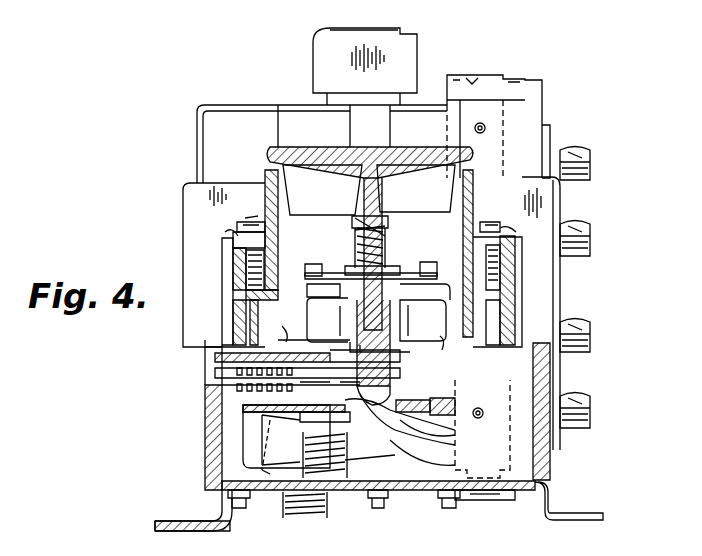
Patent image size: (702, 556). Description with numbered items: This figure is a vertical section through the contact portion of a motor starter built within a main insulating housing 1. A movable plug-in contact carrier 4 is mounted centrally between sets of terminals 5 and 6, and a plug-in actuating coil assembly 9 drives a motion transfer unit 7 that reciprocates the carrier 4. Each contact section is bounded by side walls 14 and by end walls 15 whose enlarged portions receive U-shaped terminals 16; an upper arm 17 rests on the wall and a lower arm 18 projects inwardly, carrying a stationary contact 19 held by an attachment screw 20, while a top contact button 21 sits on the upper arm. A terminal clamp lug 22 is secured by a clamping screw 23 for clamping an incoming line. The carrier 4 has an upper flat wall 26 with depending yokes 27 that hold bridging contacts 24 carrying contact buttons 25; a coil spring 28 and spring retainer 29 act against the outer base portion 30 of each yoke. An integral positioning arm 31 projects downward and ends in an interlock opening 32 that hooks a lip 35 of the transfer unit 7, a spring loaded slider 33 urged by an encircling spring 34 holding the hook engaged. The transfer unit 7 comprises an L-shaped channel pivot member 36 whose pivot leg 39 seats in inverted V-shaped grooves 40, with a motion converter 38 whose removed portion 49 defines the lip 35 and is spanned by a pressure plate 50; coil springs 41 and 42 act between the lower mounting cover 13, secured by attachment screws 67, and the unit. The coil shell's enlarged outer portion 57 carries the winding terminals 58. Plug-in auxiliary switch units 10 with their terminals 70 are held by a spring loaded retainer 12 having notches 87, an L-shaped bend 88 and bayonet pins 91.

The main insulating housing 1 is at (196, 132).
The movable plug-in contact carrier 4 is at (328, 145).
The terminals 5 is at (220, 310).
The terminals 6 is at (540, 296).
The motion transfer unit 7 is at (240, 428).
The plug-in actuating coil assembly 9 is at (402, 26).
The plug-in auxiliary switch units 10 is at (552, 131).
The spring loaded retainer 12 is at (484, 74).
The lower mounting cover 13 is at (576, 512).
The side walls 14 is at (300, 236).
The end walls 15 is at (258, 186).
The U-shaped terminals 16 is at (232, 280).
The upper arm 17 is at (235, 248).
The lower arm 18 is at (245, 346).
The stationary contact 19 is at (350, 320).
The attachment screw 20 is at (286, 330).
The top contact button 21 is at (318, 297).
The terminal clamp lug 22 is at (226, 232).
The clamping screw 23 is at (256, 220).
The bridging contact 24 is at (405, 273).
The contact buttons 25 is at (318, 280).
The upper flat wall 26 is at (388, 150).
The yokes 27 is at (405, 215).
The coil spring 28 is at (390, 240).
The spring retainer 29 is at (360, 265).
The outer base portion 30 is at (366, 220).
The positioning arm 31 is at (388, 322).
The interlock opening 32 is at (380, 446).
The spring loaded slider 33 is at (230, 383).
The encircling spring 34 is at (232, 364).
The lip 35 is at (445, 425).
The L-shaped channel pivot member 36 is at (284, 512).
The motion converter 38 is at (246, 414).
The pivot leg 39 is at (262, 440).
The inverted V-shaped grooves 40 is at (262, 470).
The coil spring 41 is at (305, 518).
The coil spring 42 is at (355, 466).
The removed portion 49 is at (350, 404).
The pressure plate 50 is at (412, 450).
The enlarged outer portion 57 is at (320, 58).
The terminals 58 is at (374, 555).
The attachment screws 67 is at (444, 508).
The terminals 70 is at (592, 165).
The notches 87 is at (478, 470).
The L-shaped bend 88 is at (494, 504).
The bayonet pins 91 is at (486, 126).